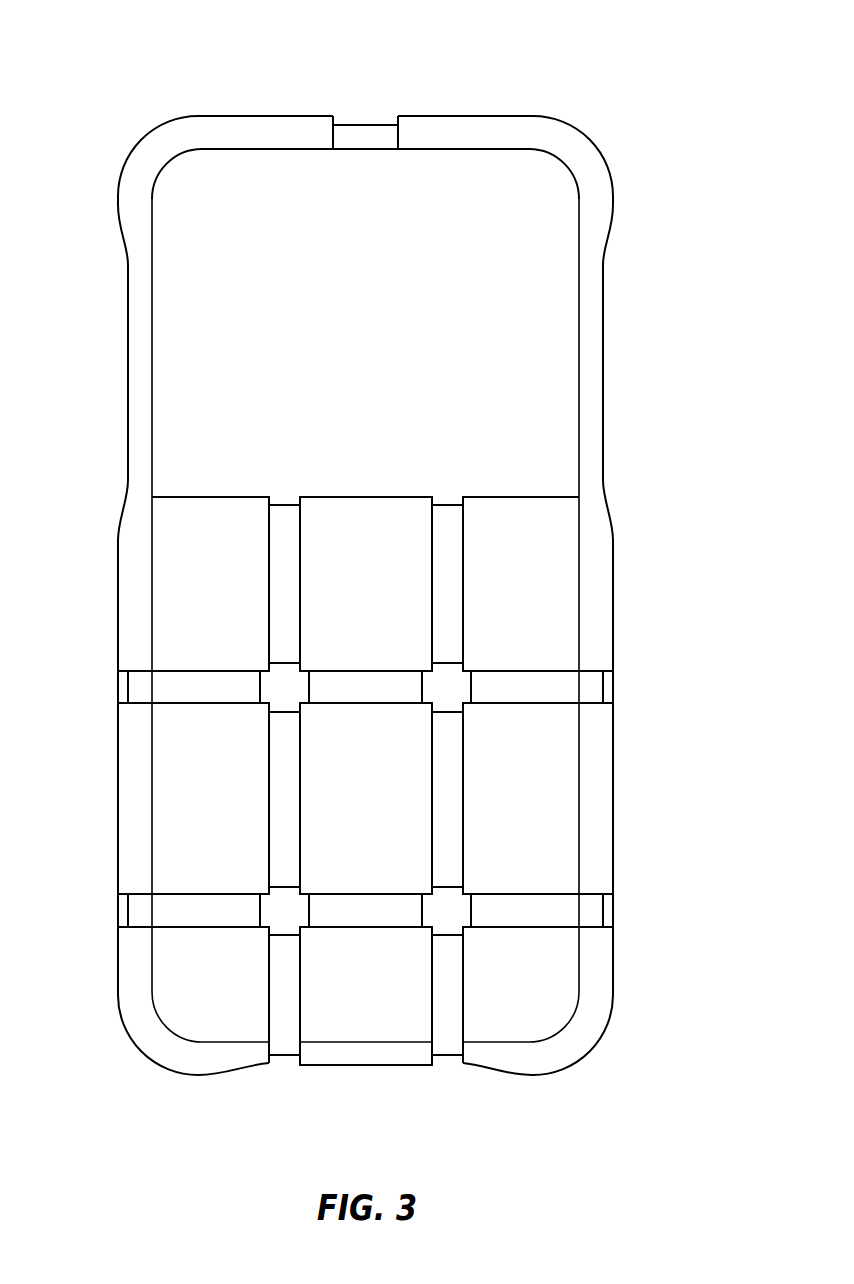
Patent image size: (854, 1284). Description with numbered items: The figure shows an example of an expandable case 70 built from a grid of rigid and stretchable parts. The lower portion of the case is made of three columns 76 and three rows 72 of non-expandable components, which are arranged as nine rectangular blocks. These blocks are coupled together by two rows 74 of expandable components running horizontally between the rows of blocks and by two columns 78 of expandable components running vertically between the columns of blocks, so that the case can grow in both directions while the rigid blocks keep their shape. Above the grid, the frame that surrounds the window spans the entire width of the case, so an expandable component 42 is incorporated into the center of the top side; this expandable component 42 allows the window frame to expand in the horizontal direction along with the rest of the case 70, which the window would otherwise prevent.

The expandable case 70 is at (183, 60).
The expandable component 42 is at (367, 125).
The rows of non-expandable components 72 is at (540, 588).
The rows of expandable components 74 is at (580, 688).
The columns of non-expandable components 76 is at (195, 988).
The columns of expandable components 78 is at (288, 1042).